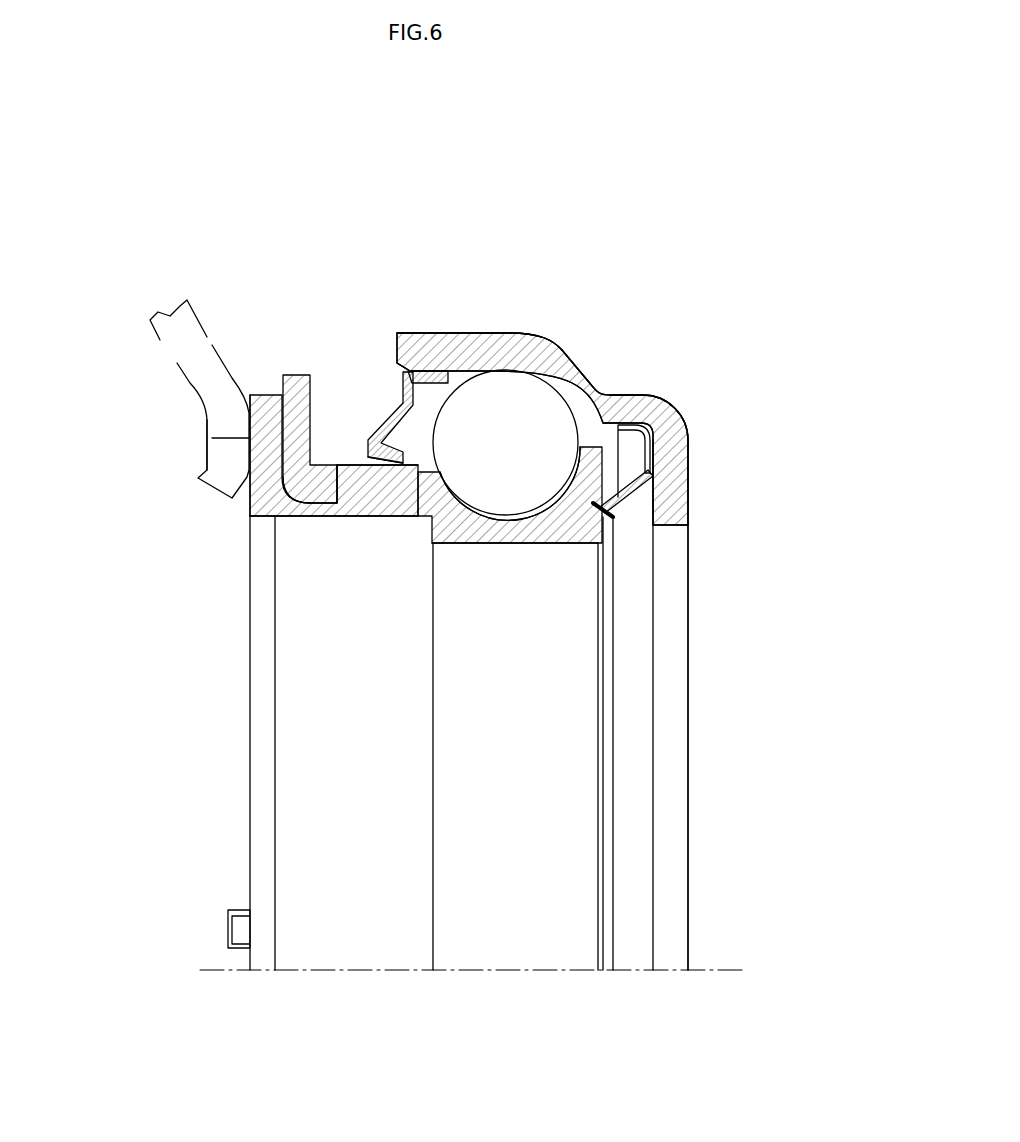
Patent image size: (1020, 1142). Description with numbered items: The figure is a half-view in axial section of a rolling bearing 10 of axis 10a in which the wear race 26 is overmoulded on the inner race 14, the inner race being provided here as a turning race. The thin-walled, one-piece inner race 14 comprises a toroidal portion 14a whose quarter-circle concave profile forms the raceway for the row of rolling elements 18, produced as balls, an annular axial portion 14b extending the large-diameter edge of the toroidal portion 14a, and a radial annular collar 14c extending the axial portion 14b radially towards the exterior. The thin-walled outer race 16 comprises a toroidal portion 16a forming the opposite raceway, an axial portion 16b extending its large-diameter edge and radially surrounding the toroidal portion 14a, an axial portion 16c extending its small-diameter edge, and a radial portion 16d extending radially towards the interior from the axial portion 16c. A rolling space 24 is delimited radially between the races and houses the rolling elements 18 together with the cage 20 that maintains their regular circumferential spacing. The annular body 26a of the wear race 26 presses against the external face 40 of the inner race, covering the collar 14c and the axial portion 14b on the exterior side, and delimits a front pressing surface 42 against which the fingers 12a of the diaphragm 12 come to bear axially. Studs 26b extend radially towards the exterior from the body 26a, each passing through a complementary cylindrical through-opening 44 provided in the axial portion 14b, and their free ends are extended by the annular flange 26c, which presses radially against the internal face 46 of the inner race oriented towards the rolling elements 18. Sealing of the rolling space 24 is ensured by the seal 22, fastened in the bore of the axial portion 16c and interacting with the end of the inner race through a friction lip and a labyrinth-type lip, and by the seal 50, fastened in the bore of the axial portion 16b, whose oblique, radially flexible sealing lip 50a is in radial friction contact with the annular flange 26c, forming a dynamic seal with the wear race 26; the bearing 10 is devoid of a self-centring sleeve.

The rolling bearing 10 is at (603, 302).
The axis 10a is at (734, 970).
The diaphragm 12 is at (168, 305).
The fingers 12a is at (180, 349).
The inner race 14 is at (522, 532).
The toroidal portion 14a is at (554, 551).
The axial portion 14b is at (318, 488).
The collar 14c is at (298, 376).
The outer race 16 is at (690, 527).
The toroidal portion 16a is at (562, 358).
The axial portion 16b is at (453, 340).
The axial portion 16c is at (627, 396).
The radial portion 16d is at (682, 493).
The rolling elements 18 is at (519, 450).
The cage 20 is at (583, 372).
The seal 22 is at (634, 504).
The rolling space 24 is at (607, 462).
The wear race 26 is at (262, 391).
The annular body 26a is at (270, 460).
The studs 26b is at (378, 492).
The annular flange 26c is at (350, 463).
The external face 40 is at (320, 512).
The pressing surface 42 is at (247, 437).
The opening 44 is at (386, 517).
The internal face 46 is at (404, 340).
The seal 50 is at (386, 420).
The sealing lip 50a is at (405, 467).